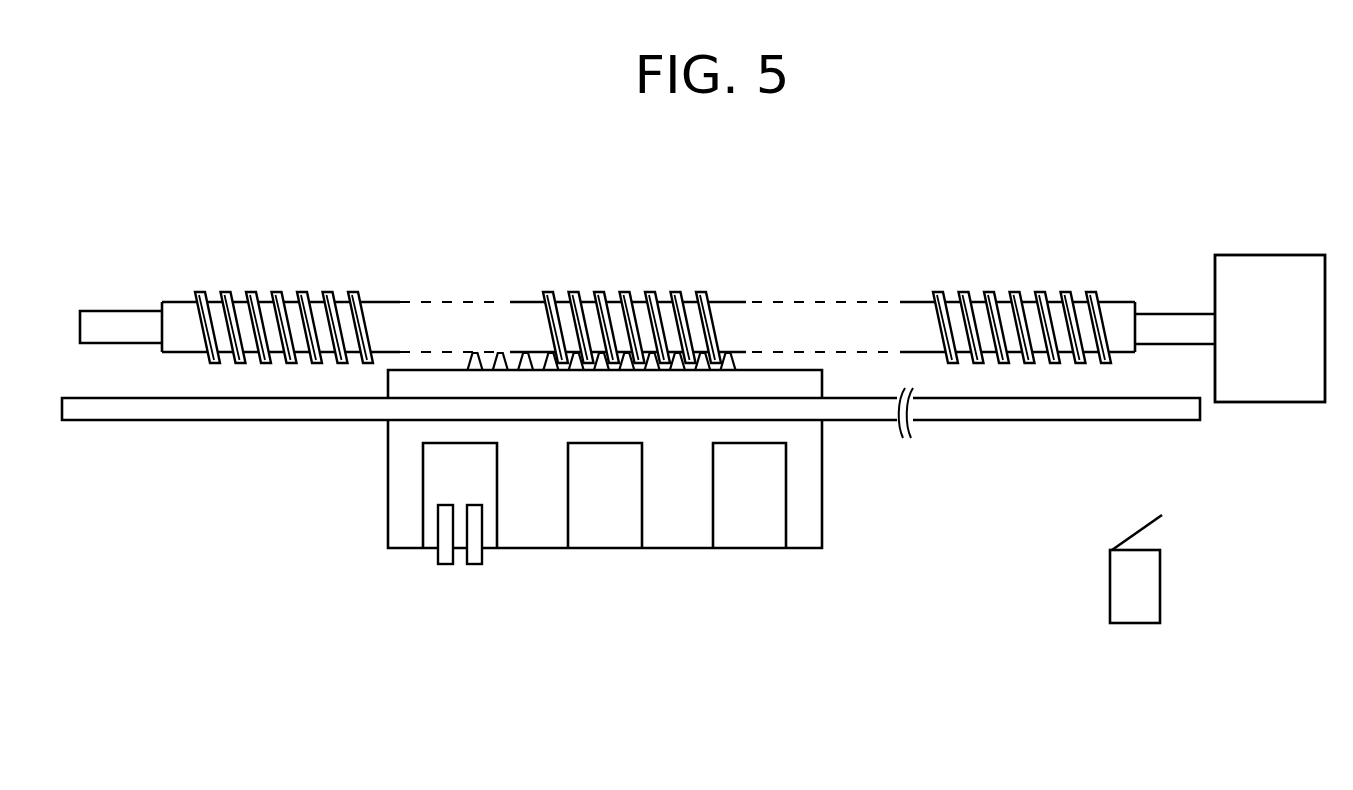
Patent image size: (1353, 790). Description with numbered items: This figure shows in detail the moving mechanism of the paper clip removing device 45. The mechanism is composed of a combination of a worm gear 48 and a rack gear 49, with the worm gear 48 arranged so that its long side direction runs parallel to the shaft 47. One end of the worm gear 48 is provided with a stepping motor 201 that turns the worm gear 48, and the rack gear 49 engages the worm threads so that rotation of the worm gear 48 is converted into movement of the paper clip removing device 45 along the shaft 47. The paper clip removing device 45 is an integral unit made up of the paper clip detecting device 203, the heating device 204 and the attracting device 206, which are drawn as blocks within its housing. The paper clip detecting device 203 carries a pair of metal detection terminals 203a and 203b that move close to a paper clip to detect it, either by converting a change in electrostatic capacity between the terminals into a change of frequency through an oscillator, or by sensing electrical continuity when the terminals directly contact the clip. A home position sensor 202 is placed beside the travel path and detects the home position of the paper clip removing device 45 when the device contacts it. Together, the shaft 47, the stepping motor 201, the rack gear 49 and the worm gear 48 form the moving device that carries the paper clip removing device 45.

The paper clip removing device 45 is at (388, 470).
The shaft 47 is at (152, 421).
The worm gear 48 is at (630, 292).
The rack gear 49 is at (505, 352).
The stepping motor 201 is at (1266, 255).
The home position sensor 202 is at (1135, 624).
The paper clip detecting device 203 is at (423, 512).
The detection terminal 203a is at (438, 565).
The detection terminal 203b is at (475, 565).
The heating device 204 is at (603, 548).
The attracting device 206 is at (745, 548).